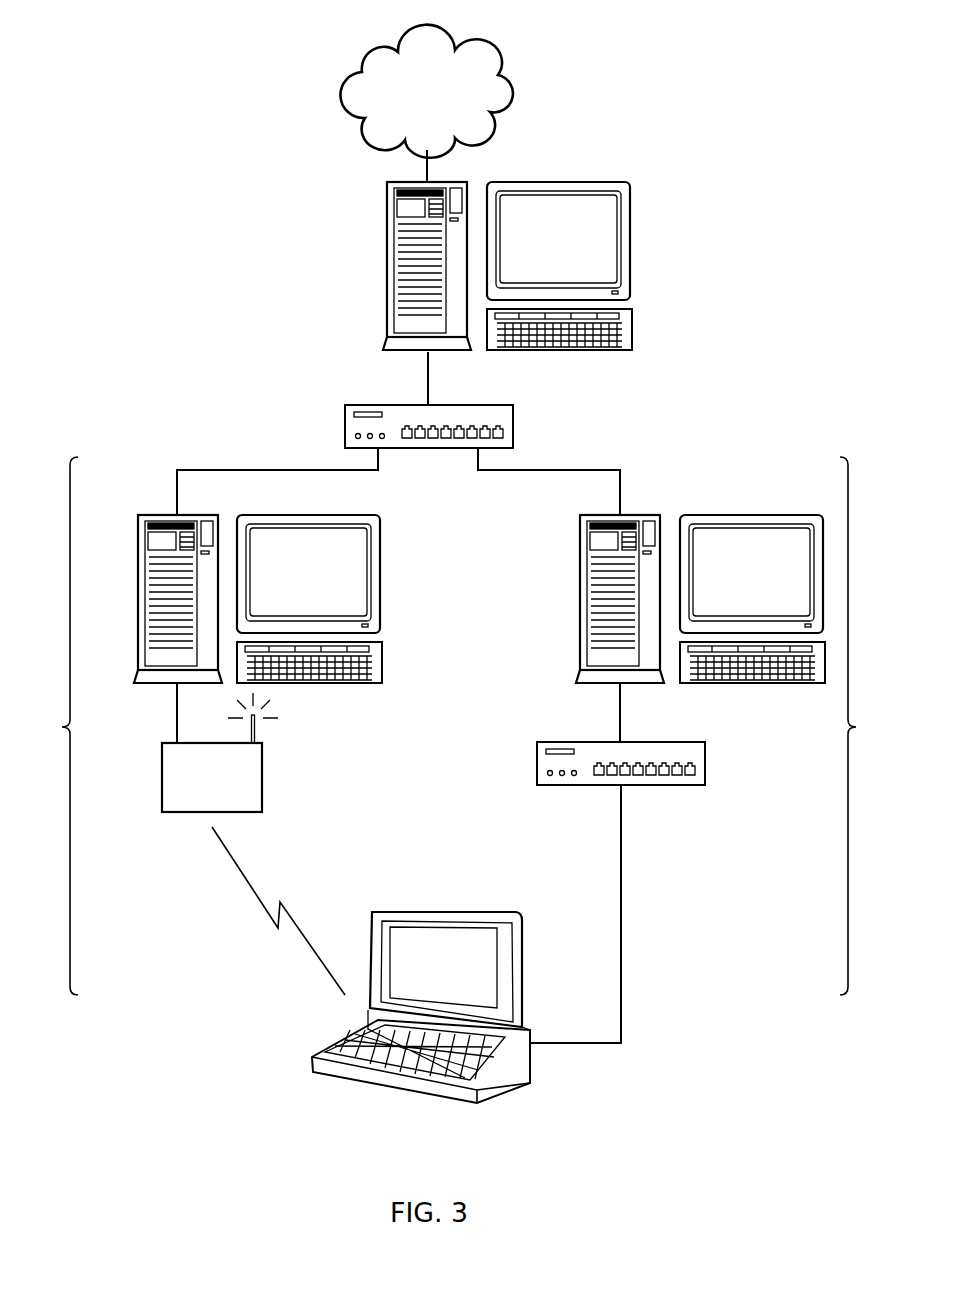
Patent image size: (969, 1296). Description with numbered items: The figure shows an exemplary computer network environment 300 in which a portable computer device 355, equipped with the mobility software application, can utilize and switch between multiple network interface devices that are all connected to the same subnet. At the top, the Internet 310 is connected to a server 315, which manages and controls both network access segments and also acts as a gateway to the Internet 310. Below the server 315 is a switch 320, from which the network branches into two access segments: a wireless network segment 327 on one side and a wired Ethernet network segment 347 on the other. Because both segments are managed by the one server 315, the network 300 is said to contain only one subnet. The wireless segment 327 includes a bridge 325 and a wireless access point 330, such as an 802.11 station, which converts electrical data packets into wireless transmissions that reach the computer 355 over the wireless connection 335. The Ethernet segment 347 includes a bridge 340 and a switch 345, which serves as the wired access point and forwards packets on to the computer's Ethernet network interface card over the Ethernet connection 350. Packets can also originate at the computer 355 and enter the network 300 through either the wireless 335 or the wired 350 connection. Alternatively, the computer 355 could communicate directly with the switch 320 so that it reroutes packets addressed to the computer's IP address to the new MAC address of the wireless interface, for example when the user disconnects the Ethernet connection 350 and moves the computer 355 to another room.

The computer network environment 300 is at (745, 65).
The Internet 310 is at (502, 65).
The server 315 is at (388, 264).
The switch 320 is at (345, 428).
The bridge 325 is at (138, 590).
The wireless network segment 327 is at (62, 727).
The wireless access point 330 is at (162, 777).
The wireless connection 335 is at (222, 953).
The bridge 340 is at (580, 546).
The switch 345 is at (537, 767).
The Ethernet network segment 347 is at (856, 727).
The Ethernet connection 350 is at (670, 960).
The portable computer device 355 is at (470, 1108).